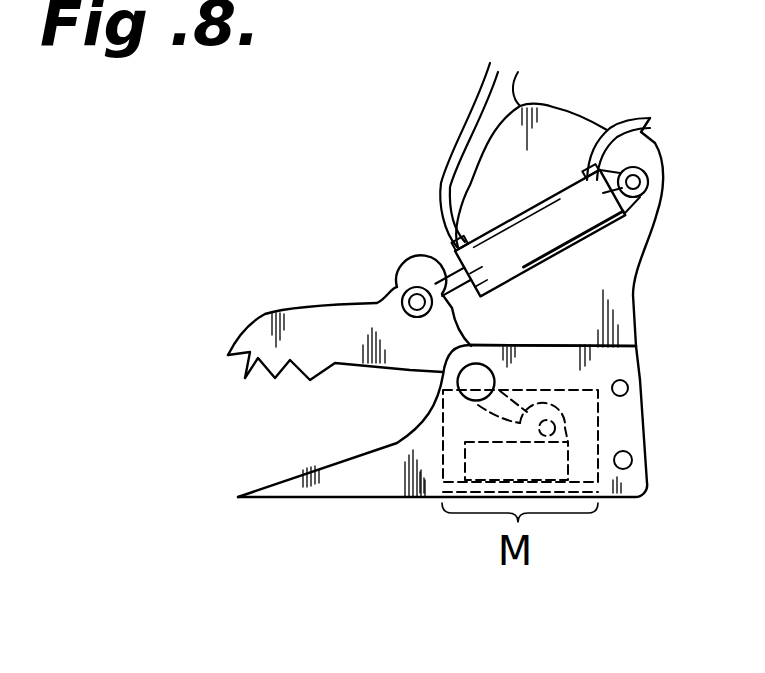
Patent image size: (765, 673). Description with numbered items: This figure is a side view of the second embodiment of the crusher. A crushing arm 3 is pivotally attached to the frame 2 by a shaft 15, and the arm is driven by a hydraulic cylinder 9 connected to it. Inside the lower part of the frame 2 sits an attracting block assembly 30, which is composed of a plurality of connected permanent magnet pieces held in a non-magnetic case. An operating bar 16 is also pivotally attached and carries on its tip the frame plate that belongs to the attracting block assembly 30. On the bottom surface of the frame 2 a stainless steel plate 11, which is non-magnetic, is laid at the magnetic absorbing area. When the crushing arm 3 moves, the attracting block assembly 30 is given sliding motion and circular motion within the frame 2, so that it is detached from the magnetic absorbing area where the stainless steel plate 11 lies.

The frame 2 is at (330, 488).
The crushing arm 3 is at (228, 357).
The hydraulic cylinder 9 is at (517, 238).
The stainless steel plate 11 is at (586, 490).
The shaft 15 is at (478, 377).
The operating bar 16 is at (523, 410).
The attracting block assembly 30 is at (487, 470).